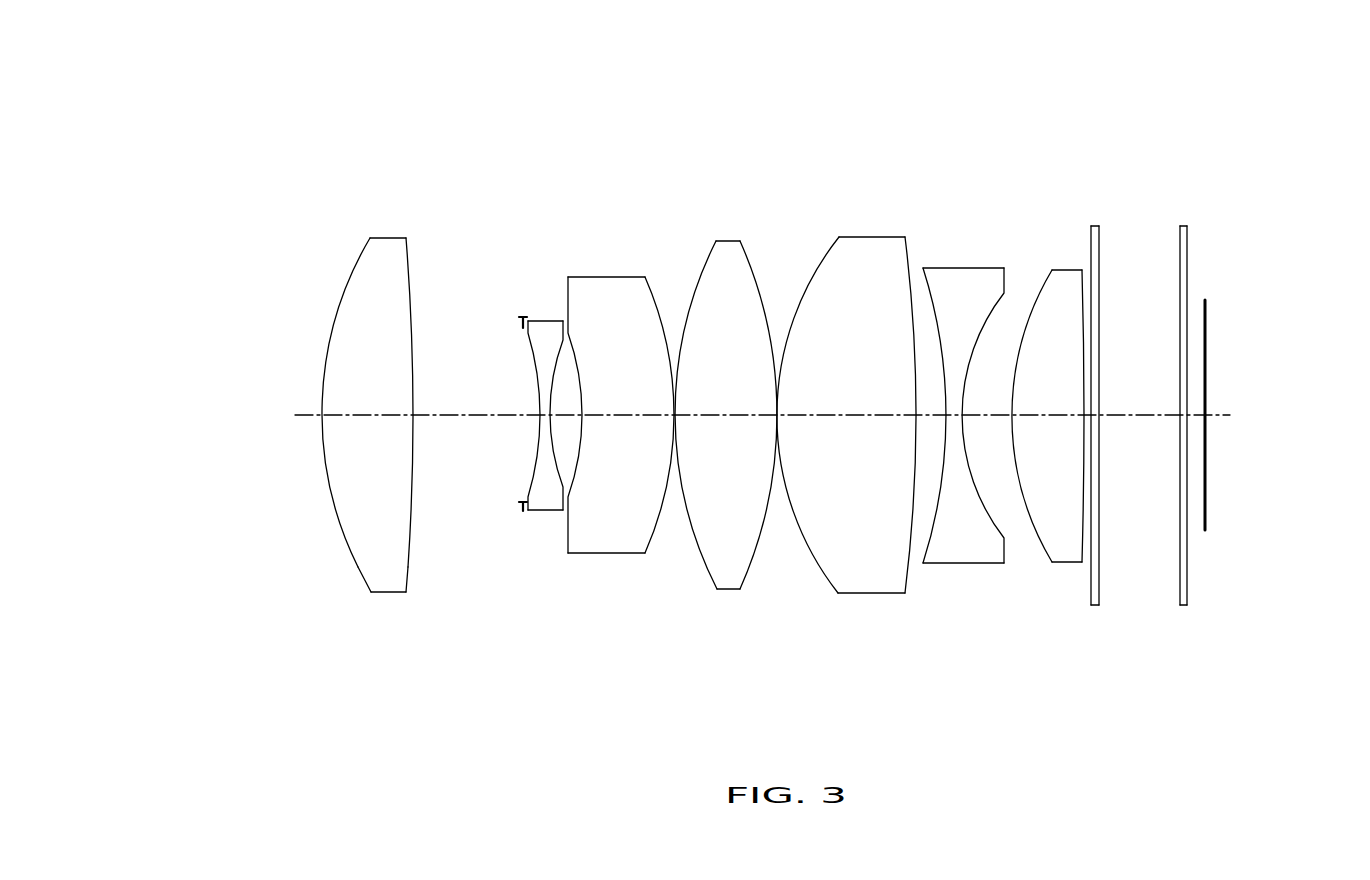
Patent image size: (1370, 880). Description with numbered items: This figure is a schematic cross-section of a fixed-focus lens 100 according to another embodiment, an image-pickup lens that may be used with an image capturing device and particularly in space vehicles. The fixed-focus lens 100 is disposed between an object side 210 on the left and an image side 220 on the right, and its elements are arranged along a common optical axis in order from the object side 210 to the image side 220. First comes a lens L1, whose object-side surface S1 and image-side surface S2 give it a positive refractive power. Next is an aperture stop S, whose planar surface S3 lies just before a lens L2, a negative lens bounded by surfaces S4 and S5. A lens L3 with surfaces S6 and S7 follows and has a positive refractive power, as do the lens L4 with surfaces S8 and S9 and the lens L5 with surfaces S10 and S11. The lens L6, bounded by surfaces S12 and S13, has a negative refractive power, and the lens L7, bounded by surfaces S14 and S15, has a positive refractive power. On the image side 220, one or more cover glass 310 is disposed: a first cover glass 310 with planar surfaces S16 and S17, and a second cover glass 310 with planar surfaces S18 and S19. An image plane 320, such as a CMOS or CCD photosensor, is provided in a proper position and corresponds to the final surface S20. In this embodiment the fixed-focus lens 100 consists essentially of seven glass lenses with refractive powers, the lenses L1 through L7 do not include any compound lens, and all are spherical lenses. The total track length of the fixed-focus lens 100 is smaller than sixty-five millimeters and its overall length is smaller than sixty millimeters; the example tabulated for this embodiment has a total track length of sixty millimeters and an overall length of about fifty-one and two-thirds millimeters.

The fixed-focus lens 100 is at (283, 90).
The object side 210 is at (222, 427).
The image side 220 is at (1302, 428).
The lens L1 is at (364, 440).
The lens L2 is at (515, 442).
The lens L3 is at (618, 436).
The lens L4 is at (729, 442).
The lens L5 is at (851, 442).
The lens L6 is at (988, 449).
The lens L7 is at (1071, 442).
The aperture stop S is at (525, 322).
The cover glass 310 is at (1187, 427).
The image plane 320 is at (1256, 381).
The surface S1 is at (355, 567).
The surface S2 is at (408, 567).
The surface S3 is at (523, 508).
The surface S4 is at (543, 512).
The surface S5 is at (563, 512).
The surface S6 is at (575, 473).
The surface S7 is at (655, 532).
The surface S8 is at (705, 570).
The surface S9 is at (752, 568).
The surface S10 is at (823, 577).
The surface S11 is at (907, 562).
The surface S12 is at (928, 528).
The surface S13 is at (993, 522).
The surface S14 is at (1038, 538).
The surface S15 is at (1082, 542).
The surface S16 is at (1090, 595).
The surface S17 is at (1100, 510).
The surface S18 is at (1180, 577).
The surface S19 is at (1187, 542).
The surface S20 is at (1205, 503).